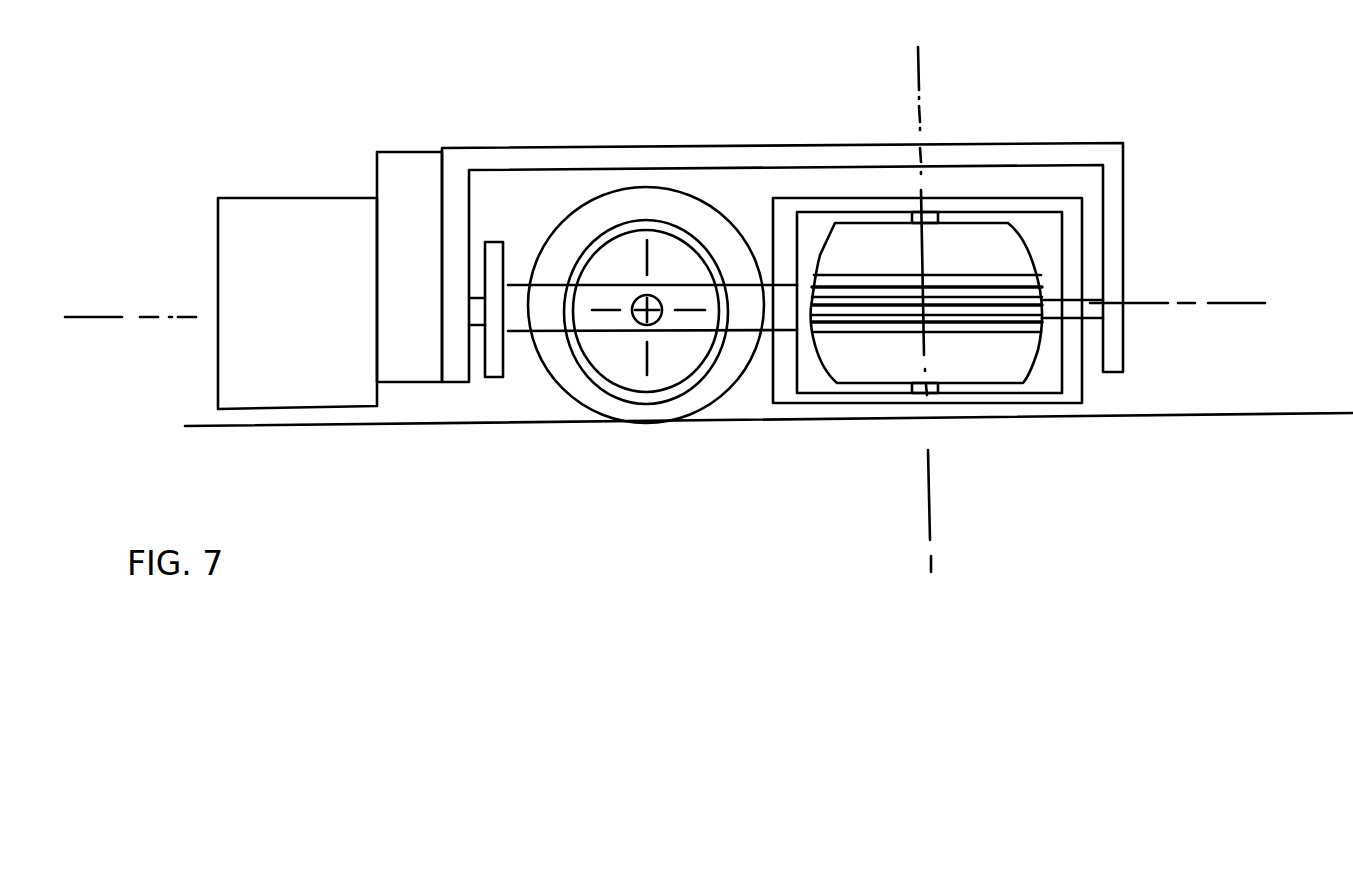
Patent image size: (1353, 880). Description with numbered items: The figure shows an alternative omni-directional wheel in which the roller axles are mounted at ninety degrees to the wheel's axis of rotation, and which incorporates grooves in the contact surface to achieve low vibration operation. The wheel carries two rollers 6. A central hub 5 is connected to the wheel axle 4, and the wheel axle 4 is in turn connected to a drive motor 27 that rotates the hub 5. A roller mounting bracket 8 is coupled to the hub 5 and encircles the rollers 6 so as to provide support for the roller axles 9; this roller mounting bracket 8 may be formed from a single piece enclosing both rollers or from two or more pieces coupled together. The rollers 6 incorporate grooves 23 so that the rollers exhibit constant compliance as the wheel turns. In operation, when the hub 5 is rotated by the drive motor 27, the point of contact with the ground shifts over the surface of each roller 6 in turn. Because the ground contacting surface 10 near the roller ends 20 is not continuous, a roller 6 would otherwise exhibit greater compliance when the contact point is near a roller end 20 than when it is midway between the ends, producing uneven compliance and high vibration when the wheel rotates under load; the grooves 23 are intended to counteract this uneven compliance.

The wheel axle 4 is at (690, 309).
The hub 5 is at (536, 379).
The roller 6 is at (778, 249).
The roller mounting bracket 8 is at (1019, 300).
The roller axle 9 is at (800, 282).
The ground contacting surface 10 is at (702, 449).
The roller end 20 is at (972, 438).
The groove 23 is at (893, 192).
The drive motor 27 is at (218, 303).